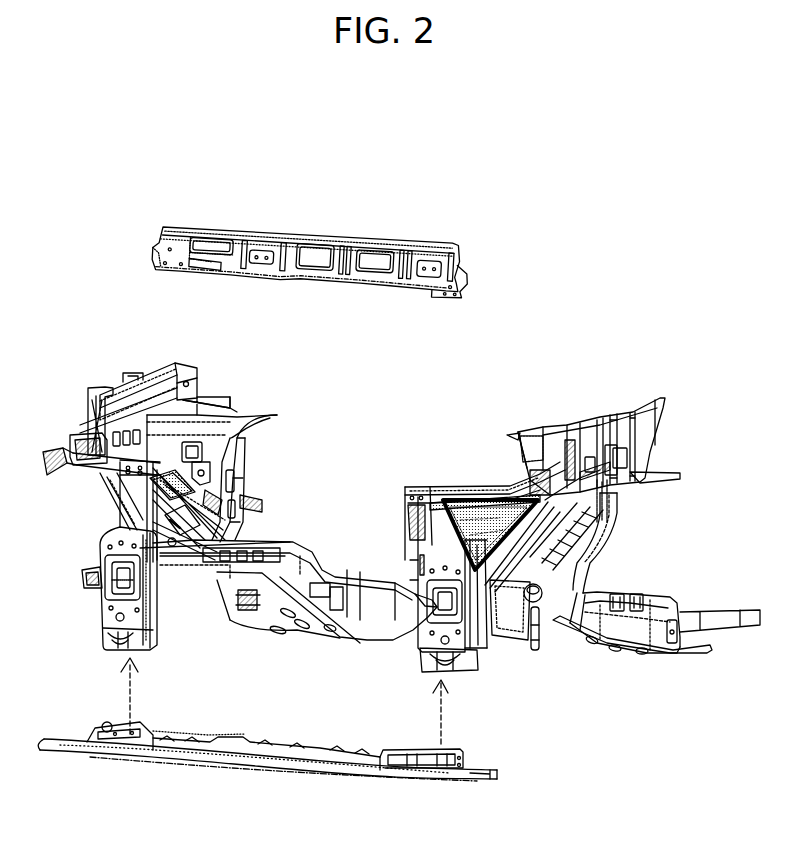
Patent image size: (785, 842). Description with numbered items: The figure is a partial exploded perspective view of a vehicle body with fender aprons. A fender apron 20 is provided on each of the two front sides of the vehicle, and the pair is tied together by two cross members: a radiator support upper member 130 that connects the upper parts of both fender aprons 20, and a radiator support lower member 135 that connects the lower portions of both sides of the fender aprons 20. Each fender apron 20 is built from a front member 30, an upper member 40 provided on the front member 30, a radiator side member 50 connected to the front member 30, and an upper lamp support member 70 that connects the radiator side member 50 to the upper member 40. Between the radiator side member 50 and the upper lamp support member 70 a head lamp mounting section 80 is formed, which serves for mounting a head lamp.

The fender apron 20 is at (170, 623).
The front member 30 is at (288, 570).
The upper member 40 is at (127, 395).
The radiator side member 50 is at (102, 610).
The upper lamp support member 70 is at (70, 440).
The head lamp mounting section 80 is at (98, 488).
The radiator support upper member 130 is at (370, 257).
The radiator support lower member 135 is at (260, 755).